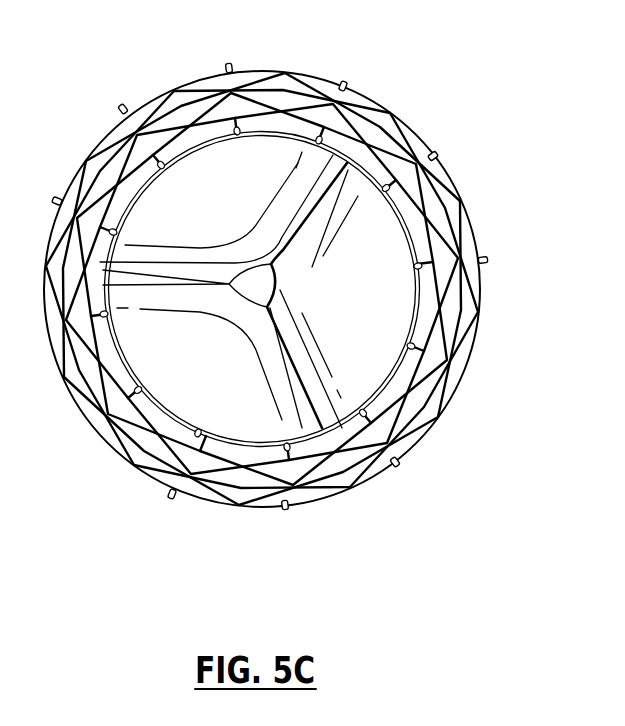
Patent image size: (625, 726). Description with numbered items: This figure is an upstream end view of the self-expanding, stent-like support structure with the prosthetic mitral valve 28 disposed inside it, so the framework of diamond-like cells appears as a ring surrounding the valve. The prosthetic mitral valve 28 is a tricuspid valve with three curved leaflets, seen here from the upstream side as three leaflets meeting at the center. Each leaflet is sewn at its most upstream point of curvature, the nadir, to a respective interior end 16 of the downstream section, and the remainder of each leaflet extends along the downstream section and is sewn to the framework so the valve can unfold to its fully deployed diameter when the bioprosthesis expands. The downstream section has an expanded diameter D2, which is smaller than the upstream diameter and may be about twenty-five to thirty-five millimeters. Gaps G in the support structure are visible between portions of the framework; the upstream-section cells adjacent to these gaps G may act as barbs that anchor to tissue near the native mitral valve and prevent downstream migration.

The prosthetic mitral valve 28 is at (393, 367).
The interior ends 16 is at (158, 162).
The gaps G is at (416, 339).
The expanded diameter D2 is at (108, 292).